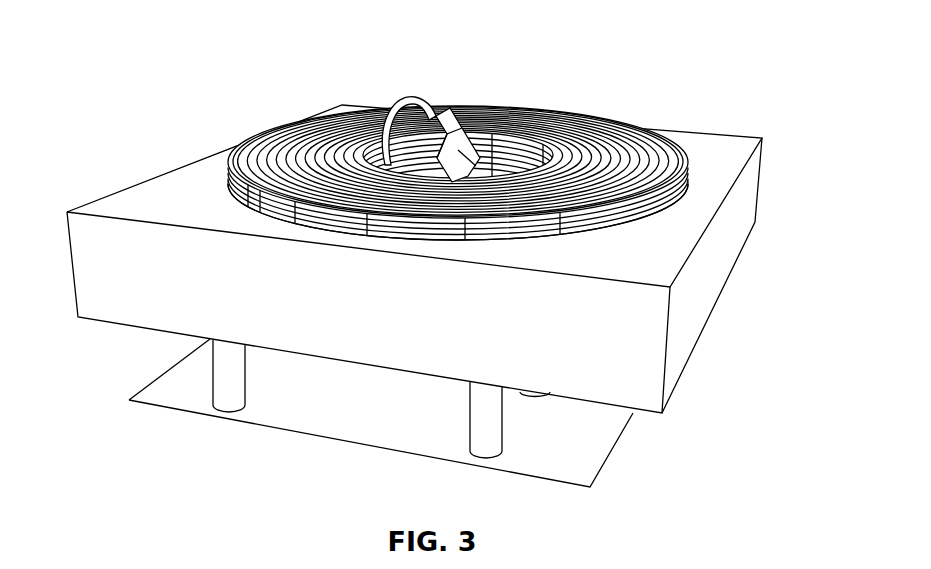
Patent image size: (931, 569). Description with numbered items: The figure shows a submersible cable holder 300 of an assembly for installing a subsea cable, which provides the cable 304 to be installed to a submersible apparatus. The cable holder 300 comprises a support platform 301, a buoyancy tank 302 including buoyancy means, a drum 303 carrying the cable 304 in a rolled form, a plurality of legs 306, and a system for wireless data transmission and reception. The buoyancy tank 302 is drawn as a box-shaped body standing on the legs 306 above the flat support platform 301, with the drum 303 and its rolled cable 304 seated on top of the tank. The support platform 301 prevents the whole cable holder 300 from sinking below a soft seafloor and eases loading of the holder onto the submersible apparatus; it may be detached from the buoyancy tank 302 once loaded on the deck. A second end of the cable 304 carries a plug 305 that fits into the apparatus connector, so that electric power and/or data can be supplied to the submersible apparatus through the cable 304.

The submersible cable holder 300 is at (140, 123).
The support platform 301 is at (348, 405).
The buoyancy tank 302 is at (122, 305).
The drum 303 is at (526, 250).
The cable 304 is at (458, 100).
The plug 305 is at (678, 152).
The legs 306 is at (228, 385).